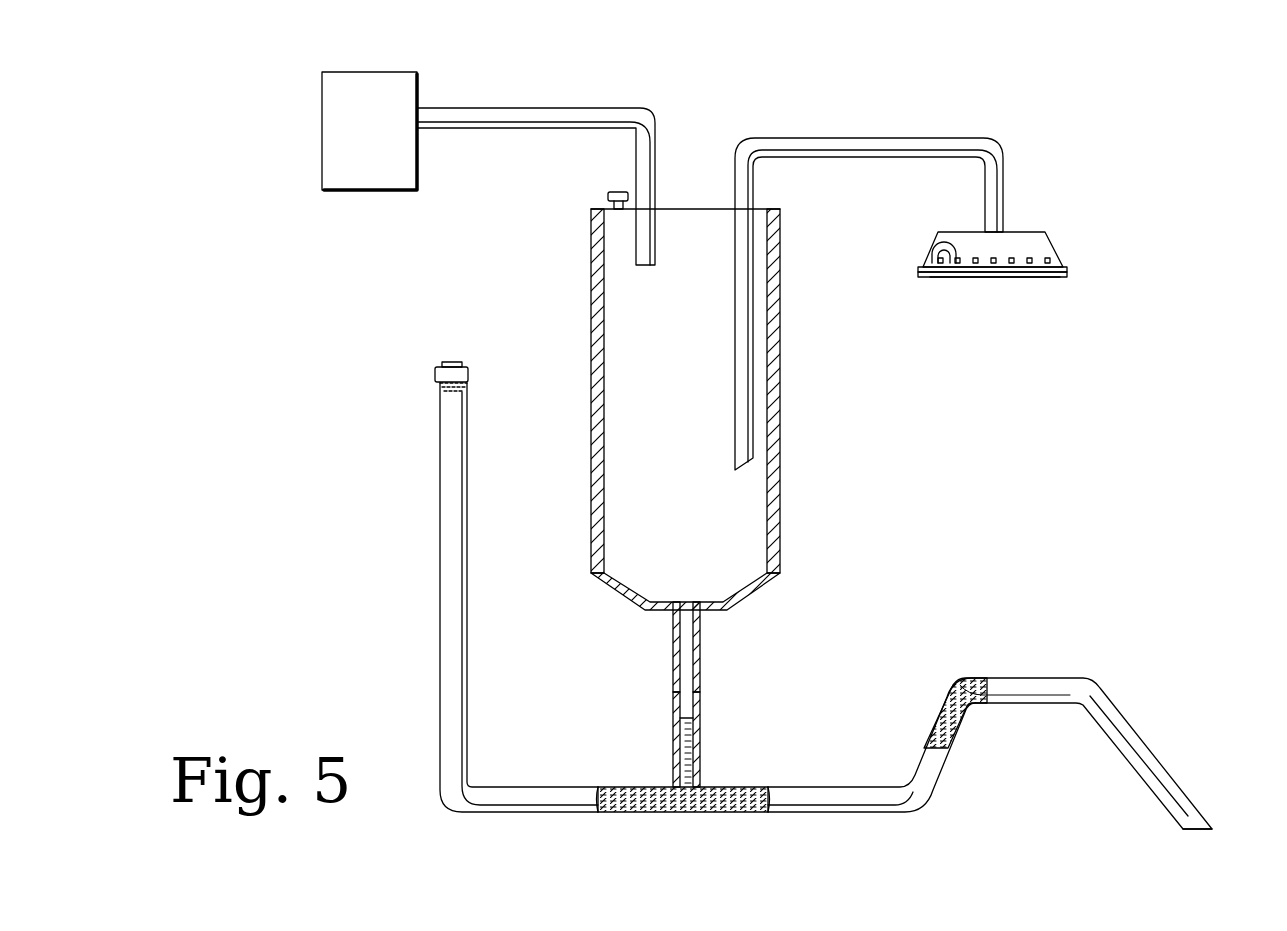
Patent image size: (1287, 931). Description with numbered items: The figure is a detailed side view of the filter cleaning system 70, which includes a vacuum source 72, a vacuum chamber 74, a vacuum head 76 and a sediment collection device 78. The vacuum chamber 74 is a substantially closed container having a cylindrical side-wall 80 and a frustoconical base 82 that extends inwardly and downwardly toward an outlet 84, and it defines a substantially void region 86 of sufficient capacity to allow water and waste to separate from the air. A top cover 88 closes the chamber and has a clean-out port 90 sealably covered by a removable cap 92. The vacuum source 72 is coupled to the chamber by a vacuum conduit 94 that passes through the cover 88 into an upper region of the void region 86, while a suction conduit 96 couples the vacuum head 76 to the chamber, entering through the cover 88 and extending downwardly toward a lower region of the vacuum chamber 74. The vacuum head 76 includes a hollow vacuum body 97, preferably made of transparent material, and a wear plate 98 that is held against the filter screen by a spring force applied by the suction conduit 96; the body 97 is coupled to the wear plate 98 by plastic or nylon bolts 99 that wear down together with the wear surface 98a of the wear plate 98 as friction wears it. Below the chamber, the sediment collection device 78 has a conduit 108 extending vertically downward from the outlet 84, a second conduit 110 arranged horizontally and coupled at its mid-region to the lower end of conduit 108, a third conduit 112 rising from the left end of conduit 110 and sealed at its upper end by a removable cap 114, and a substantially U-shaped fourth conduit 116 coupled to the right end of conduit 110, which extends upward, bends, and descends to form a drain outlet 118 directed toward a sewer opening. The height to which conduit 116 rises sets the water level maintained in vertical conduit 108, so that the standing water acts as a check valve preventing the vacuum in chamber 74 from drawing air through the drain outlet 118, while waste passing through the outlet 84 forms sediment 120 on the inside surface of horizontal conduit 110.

The filter cleaning system 70 is at (1160, 100).
The vacuum source 72 is at (383, 146).
The vacuum chamber 74 is at (835, 474).
The vacuum head 76 is at (1066, 238).
The sediment collection device 78 is at (903, 625).
The cylindrical side-wall 80 is at (782, 397).
The frustoconical base 82 is at (762, 596).
The outlet 84 is at (702, 611).
The void region 86 is at (632, 325).
The top cover 88 is at (694, 208).
The clean-out port 90 is at (608, 208).
The removable cap 92 is at (611, 192).
The vacuum conduit 94 is at (520, 108).
The suction conduit 96 is at (873, 138).
The hollow vacuum body 97 is at (1066, 256).
The wear plate 98 is at (1068, 272).
The wear surface 98a is at (1036, 280).
The plastic or nylon bolts 99 is at (933, 250).
The conduit 108 is at (703, 708).
The second conduit 110 is at (838, 814).
The third conduit 112 is at (440, 543).
The removable cap 114 is at (437, 366).
The fourth conduit 116 is at (1030, 678).
The drain outlet 118 is at (1197, 830).
The sediment 120 is at (682, 814).